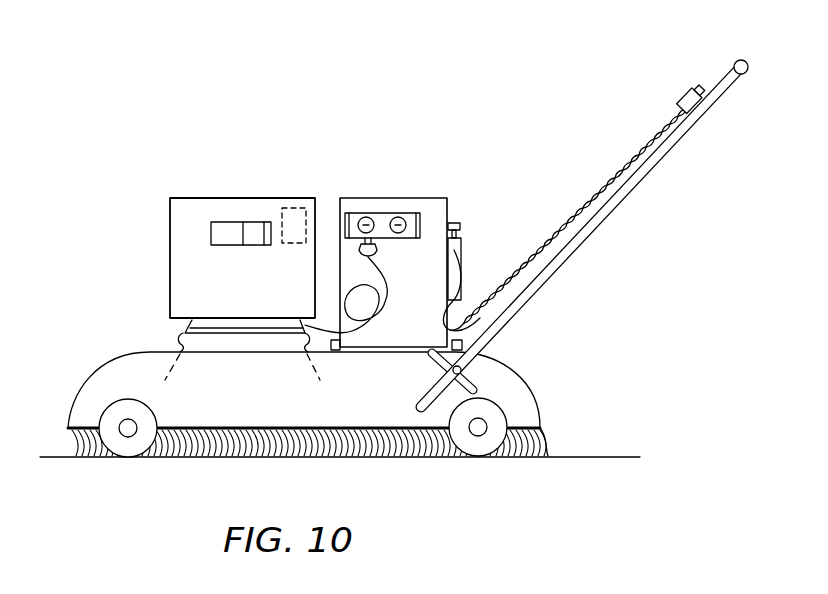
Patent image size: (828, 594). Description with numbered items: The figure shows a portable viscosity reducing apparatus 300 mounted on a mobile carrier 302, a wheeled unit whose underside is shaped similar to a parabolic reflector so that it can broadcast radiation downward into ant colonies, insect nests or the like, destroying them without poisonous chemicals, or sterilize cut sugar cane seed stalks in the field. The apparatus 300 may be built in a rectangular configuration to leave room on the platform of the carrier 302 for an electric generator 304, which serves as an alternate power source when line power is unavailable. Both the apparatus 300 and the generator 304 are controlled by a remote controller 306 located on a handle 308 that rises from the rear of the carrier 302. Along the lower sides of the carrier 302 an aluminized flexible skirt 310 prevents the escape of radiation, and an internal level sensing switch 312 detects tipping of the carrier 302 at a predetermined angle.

The portable viscosity reducing apparatus 300 is at (397, 118).
The mobile carrier 302 is at (113, 357).
The electric generator 304 is at (448, 210).
The remote controller 306 is at (665, 122).
The handle 308 is at (618, 203).
The aluminized flexible skirt 310 is at (525, 458).
The internal level sensing switch 312 is at (292, 198).